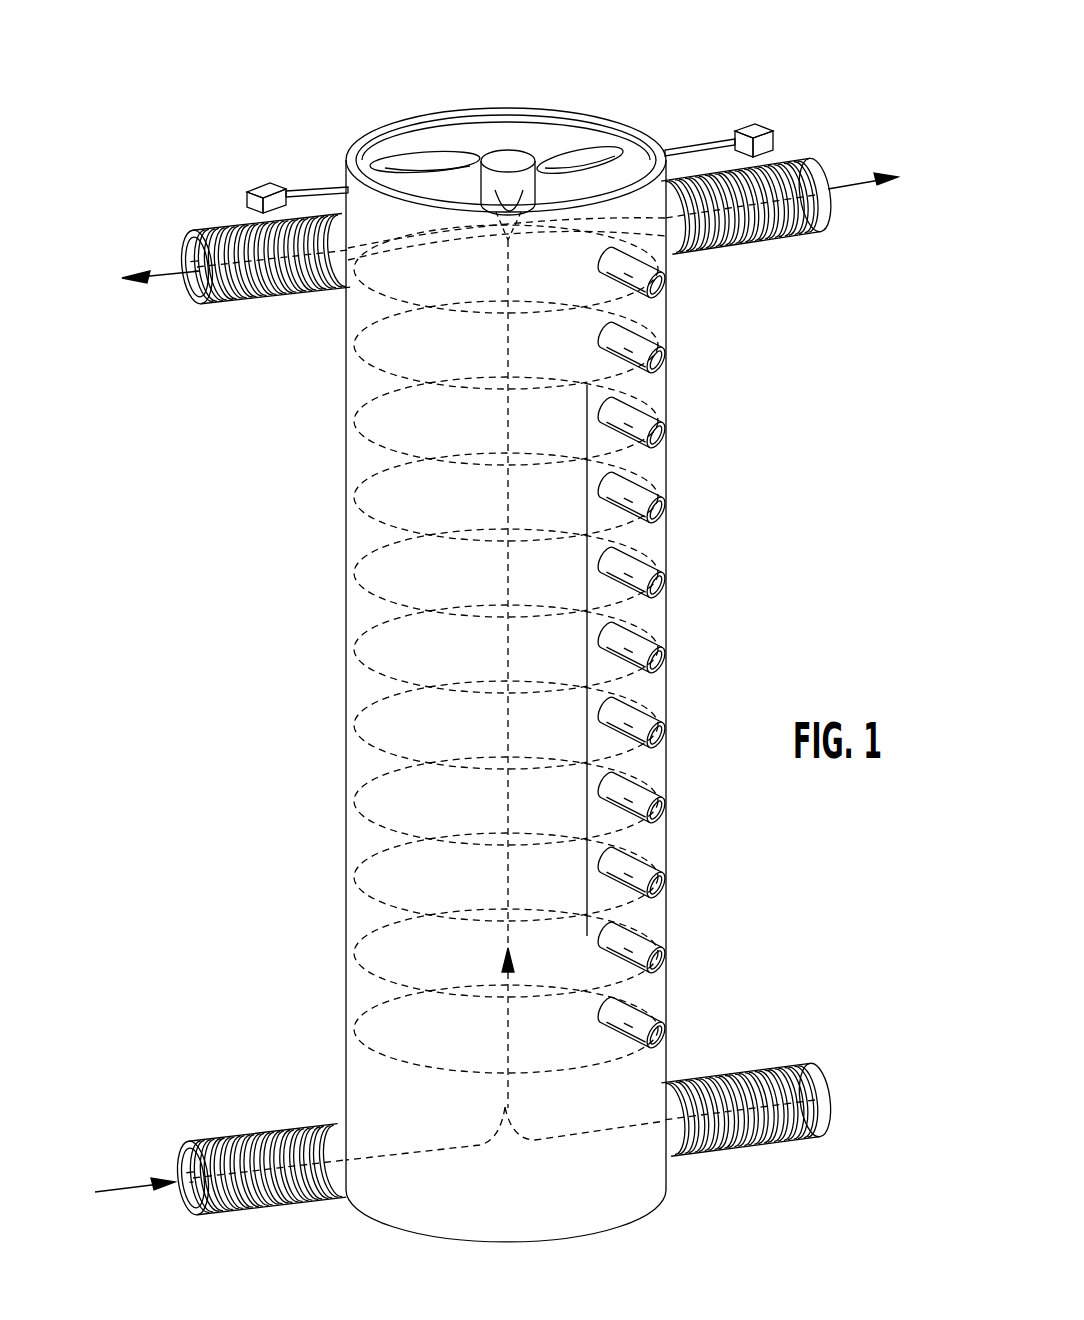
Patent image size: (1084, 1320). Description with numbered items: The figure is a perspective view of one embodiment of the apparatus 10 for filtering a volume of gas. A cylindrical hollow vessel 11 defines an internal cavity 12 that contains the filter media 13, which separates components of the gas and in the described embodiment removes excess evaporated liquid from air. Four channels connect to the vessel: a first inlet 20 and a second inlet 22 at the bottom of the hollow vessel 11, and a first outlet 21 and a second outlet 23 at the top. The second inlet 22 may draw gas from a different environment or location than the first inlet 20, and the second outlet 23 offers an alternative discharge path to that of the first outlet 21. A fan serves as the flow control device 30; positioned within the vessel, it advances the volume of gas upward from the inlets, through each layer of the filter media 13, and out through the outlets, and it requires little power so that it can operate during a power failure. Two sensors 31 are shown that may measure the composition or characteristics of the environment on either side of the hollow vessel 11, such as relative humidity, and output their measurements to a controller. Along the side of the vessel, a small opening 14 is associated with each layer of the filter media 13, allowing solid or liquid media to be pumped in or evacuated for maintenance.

The apparatus 10 is at (482, 621).
The hollow vessel 11 is at (345, 685).
The internal cavity 12 is at (463, 124).
The filter media 13 is at (372, 517).
The opening 14 is at (667, 655).
The first inlet 20 is at (190, 1140).
The first outlet 21 is at (197, 308).
The second inlet 22 is at (770, 1062).
The second outlet 23 is at (803, 237).
The flow control device 30 is at (518, 150).
The sensor 31 is at (247, 193).